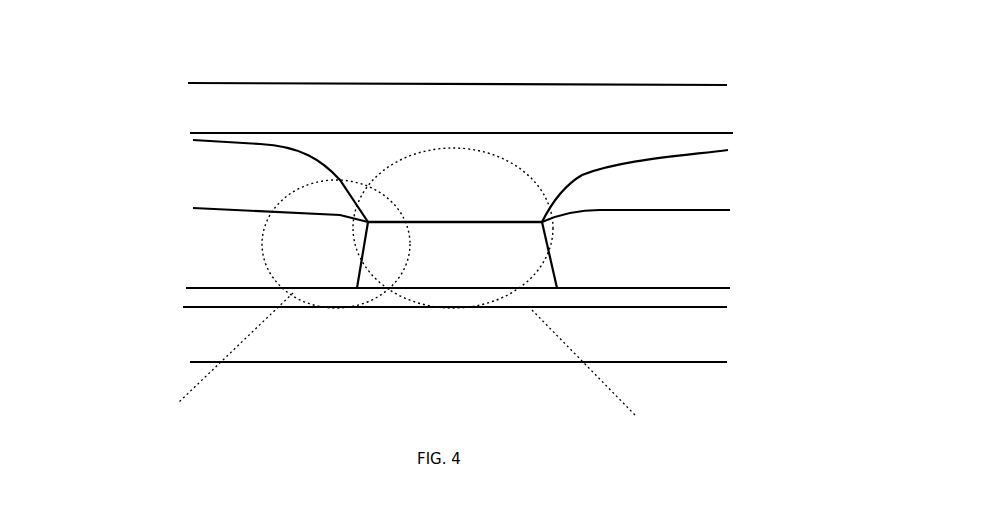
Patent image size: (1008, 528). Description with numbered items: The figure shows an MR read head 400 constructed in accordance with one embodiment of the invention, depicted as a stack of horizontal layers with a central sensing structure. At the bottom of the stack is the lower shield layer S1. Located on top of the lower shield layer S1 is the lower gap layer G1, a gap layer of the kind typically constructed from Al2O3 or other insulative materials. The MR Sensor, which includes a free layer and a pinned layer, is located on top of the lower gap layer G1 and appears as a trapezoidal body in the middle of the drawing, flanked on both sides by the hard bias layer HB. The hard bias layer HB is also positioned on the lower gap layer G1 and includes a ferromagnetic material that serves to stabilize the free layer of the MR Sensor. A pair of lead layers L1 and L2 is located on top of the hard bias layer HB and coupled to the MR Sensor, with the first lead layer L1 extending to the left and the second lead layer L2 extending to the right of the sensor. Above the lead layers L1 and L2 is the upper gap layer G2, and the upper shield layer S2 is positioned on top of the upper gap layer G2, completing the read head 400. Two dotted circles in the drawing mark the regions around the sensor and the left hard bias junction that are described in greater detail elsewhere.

The MR read head 400 is at (79, 88).
The lower shield layer S1 is at (713, 352).
The upper shield layer S2 is at (702, 107).
The lower gap layer G1 is at (700, 297).
The upper gap layer G2 is at (702, 148).
The first lead layer L1 is at (207, 181).
The second lead layer L2 is at (718, 180).
The hard bias layer HB is at (200, 248).
The MR sensor MR Sensor is at (475, 250).